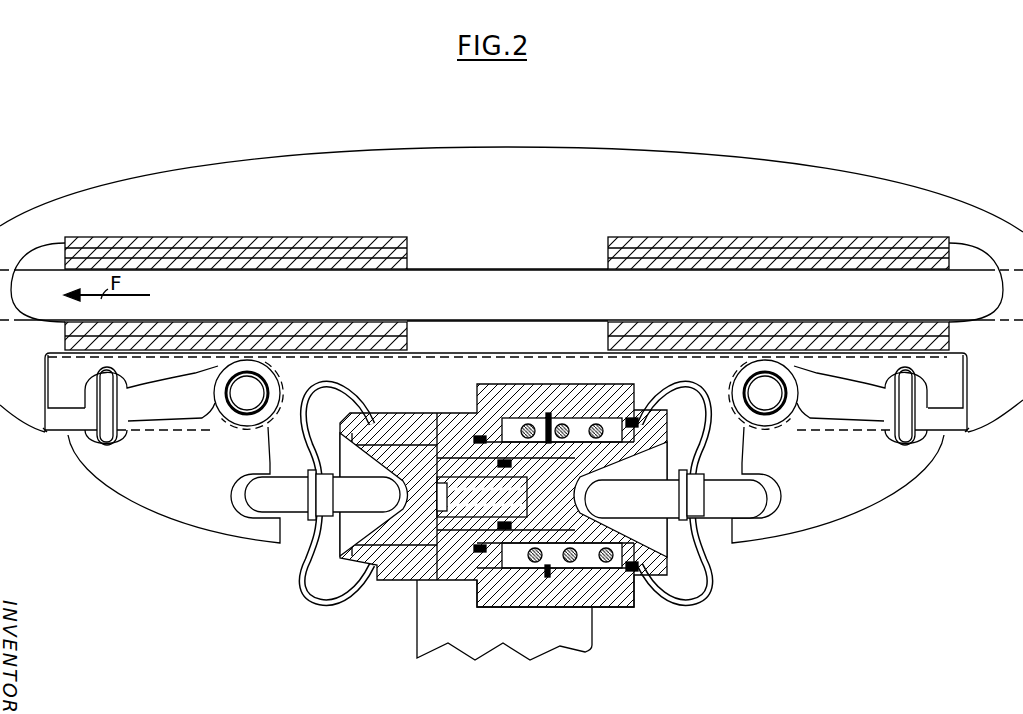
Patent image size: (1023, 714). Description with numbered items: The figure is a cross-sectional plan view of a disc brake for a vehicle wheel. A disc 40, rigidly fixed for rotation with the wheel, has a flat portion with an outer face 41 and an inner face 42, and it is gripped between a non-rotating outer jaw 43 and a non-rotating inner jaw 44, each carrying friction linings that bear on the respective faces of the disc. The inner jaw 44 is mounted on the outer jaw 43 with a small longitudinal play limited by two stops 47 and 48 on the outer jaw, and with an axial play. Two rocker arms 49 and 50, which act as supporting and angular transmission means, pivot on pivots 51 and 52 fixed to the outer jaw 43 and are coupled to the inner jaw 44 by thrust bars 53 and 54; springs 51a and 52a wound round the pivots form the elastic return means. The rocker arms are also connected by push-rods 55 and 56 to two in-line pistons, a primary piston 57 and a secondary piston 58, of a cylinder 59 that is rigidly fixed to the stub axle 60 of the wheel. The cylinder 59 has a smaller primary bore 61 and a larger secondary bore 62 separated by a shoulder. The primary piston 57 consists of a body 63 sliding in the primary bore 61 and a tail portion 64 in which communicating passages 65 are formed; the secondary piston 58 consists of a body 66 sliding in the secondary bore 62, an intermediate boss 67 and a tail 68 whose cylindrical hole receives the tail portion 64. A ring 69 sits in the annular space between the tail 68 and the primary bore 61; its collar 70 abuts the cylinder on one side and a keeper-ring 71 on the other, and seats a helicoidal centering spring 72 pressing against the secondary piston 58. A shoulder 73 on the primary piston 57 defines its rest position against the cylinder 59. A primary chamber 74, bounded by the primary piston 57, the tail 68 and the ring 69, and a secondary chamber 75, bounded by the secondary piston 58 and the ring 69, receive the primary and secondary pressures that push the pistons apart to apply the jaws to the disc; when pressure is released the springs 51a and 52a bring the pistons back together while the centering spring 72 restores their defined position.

The disc 40 is at (462, 278).
The outer face 41 is at (532, 272).
The inner face 42 is at (496, 322).
The outer jaw 43 is at (725, 160).
The inner jaw 44 is at (443, 360).
The stop 47 is at (48, 434).
The stop 48 is at (966, 432).
The rocker arm 49 is at (118, 487).
The rocker arm 50 is at (910, 470).
The pivot 51 is at (225, 418).
The spring 51a is at (236, 420).
The pivot 52 is at (788, 405).
The spring 52a is at (785, 423).
The thrust bar 53 is at (113, 410).
The thrust bar 54 is at (897, 403).
The push-rod 55 is at (283, 483).
The push-rod 56 is at (720, 480).
The primary piston 57 is at (397, 552).
The secondary piston 58 is at (663, 562).
The cylinder 59 is at (612, 598).
The stub axle 60 is at (592, 636).
The primary bore 61 is at (430, 462).
The secondary bore 62 is at (632, 440).
The body 63 is at (373, 437).
The tail portion 64 is at (478, 455).
The communicating passages 65 is at (459, 543).
The body 66 is at (621, 418).
The intermediate boss 67 is at (568, 440).
The tail 68 is at (482, 437).
The ring 69 is at (484, 555).
The collar 70 is at (512, 585).
The keeper-ring 71 is at (555, 590).
The centering spring 72 is at (530, 425).
The shoulder 73 is at (348, 566).
The primary chamber 74 is at (440, 565).
The secondary chamber 75 is at (585, 585).